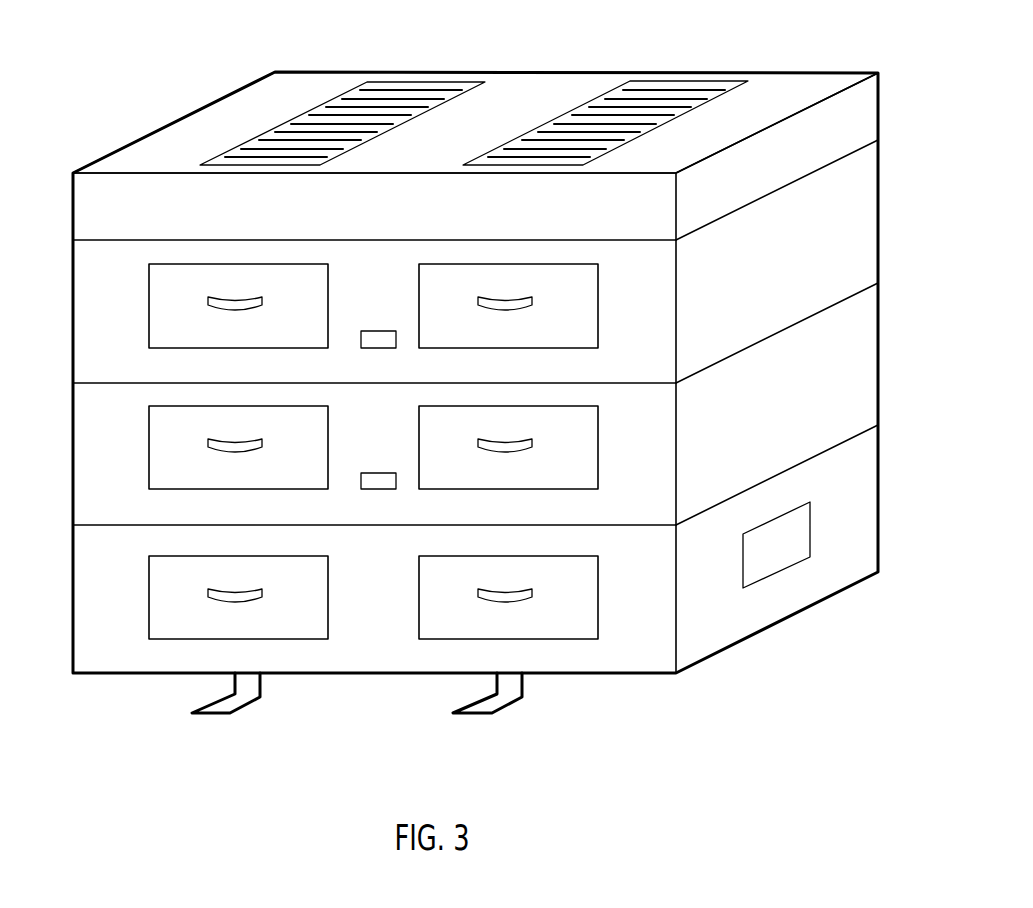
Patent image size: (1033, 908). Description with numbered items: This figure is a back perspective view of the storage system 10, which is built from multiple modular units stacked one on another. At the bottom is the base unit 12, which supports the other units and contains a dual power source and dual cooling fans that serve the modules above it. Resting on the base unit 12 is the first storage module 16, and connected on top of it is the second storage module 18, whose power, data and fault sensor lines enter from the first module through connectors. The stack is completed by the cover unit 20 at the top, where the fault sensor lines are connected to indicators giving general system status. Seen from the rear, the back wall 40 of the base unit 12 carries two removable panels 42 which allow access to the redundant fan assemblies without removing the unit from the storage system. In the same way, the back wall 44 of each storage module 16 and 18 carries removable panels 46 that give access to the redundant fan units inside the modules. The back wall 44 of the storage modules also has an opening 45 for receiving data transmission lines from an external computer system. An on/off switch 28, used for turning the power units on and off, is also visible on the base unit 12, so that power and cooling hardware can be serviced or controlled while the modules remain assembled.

The storage system 10 is at (150, 76).
The base unit 12 is at (855, 477).
The first storage module 16 is at (855, 368).
The second storage module 18 is at (853, 227).
The cover unit 20 is at (853, 127).
The on/off switch 28 is at (775, 572).
The back wall 40 is at (90, 612).
The removable panels 42 is at (235, 639).
The back wall 44 is at (97, 352).
The opening 45 is at (370, 348).
The removable panels 46 is at (235, 348).